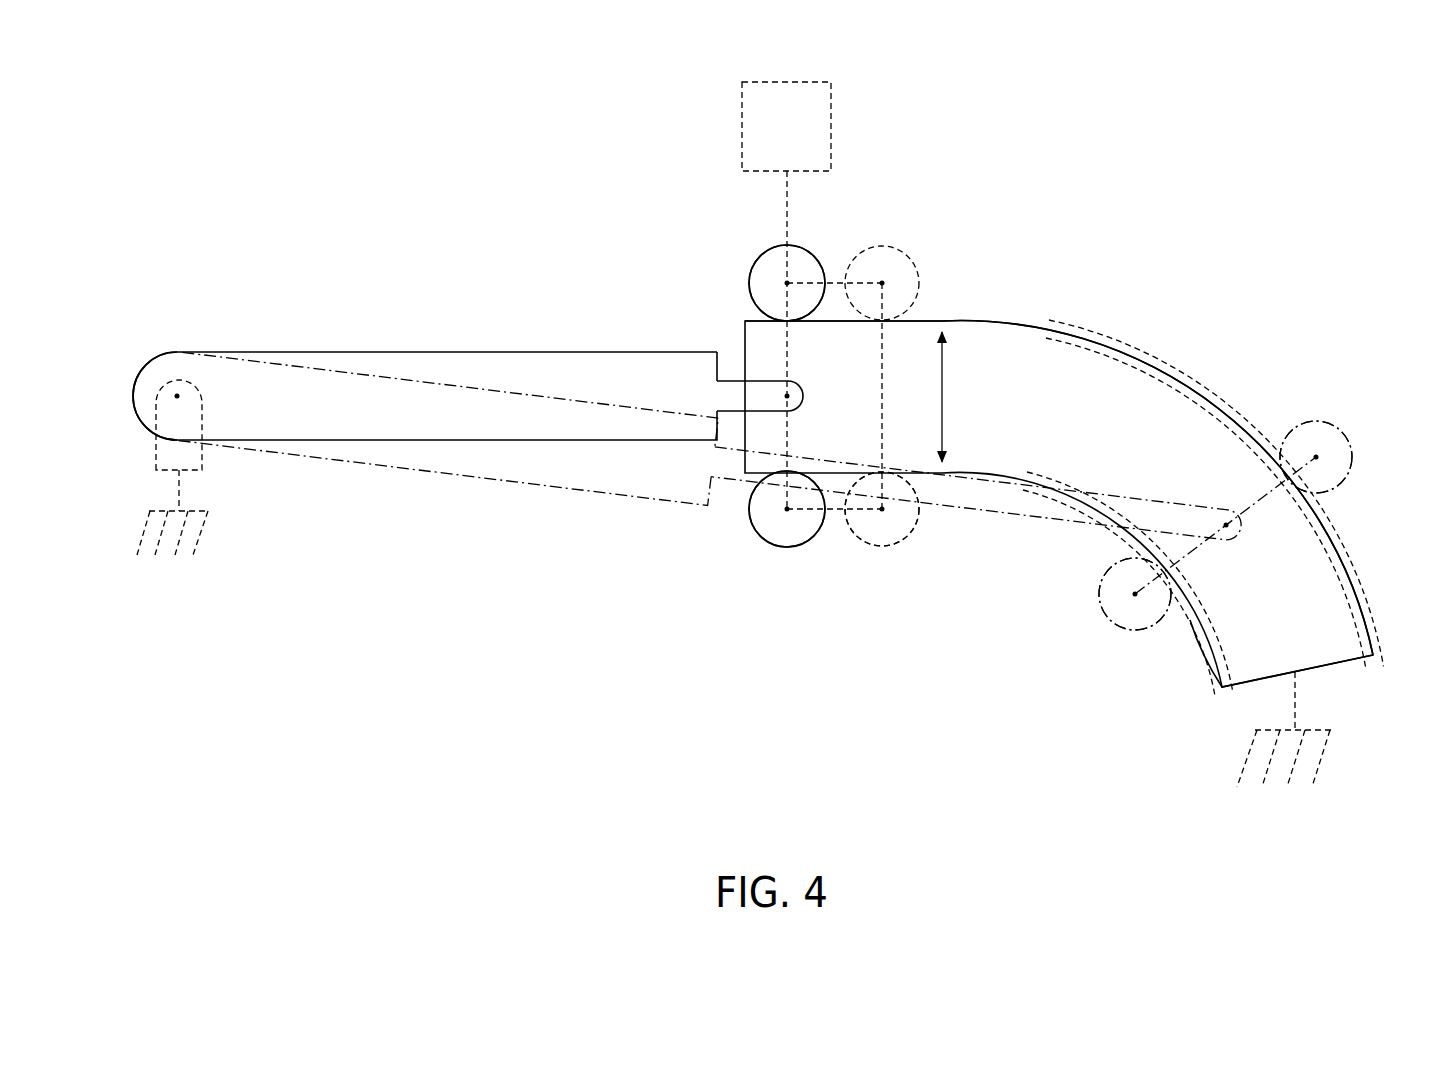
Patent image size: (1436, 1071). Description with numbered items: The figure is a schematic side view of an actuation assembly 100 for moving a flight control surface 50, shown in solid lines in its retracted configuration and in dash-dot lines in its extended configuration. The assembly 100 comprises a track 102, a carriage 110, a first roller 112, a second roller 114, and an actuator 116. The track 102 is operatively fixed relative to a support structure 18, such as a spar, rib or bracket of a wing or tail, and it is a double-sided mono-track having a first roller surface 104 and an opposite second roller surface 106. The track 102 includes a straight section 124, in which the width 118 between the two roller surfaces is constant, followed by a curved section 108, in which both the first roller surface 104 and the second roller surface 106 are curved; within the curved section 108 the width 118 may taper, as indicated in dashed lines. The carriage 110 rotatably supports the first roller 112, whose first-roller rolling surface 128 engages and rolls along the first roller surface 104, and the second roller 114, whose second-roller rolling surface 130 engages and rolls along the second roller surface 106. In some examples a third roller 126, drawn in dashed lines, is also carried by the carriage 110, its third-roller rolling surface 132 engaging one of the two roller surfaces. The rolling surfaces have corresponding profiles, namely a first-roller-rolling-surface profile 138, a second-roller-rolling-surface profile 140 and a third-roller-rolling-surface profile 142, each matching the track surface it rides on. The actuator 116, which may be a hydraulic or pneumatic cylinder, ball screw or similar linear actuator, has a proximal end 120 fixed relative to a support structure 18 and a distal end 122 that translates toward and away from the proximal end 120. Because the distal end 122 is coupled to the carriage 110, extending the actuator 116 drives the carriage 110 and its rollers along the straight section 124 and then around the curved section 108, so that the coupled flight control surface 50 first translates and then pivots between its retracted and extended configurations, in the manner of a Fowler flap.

The support structure 18 is at (197, 511).
The flight control surface 50 is at (803, 82).
The actuation assembly 100 is at (1285, 152).
The track 102 is at (1077, 300).
The first roller surface 104 is at (1143, 365).
The second roller surface 106 is at (1210, 655).
The curved section 108 is at (1203, 393).
The carriage 110 is at (787, 352).
The first roller 112 is at (806, 234).
The second roller 114 is at (758, 548).
The actuator 116 is at (522, 392).
The width 118 is at (942, 398).
The proximal end 120 is at (160, 350).
The distal end 122 is at (763, 413).
The straight section 124 is at (925, 320).
The third roller 126 is at (907, 238).
The first-roller rolling surface 128 is at (767, 248).
The second-roller rolling surface 130 is at (783, 548).
The third-roller rolling surface 132 is at (922, 270).
The first-roller-rolling-surface profile 138 is at (750, 270).
The second-roller-rolling-surface profile 140 is at (810, 547).
The third-roller-rolling-surface profile 142 is at (918, 521).